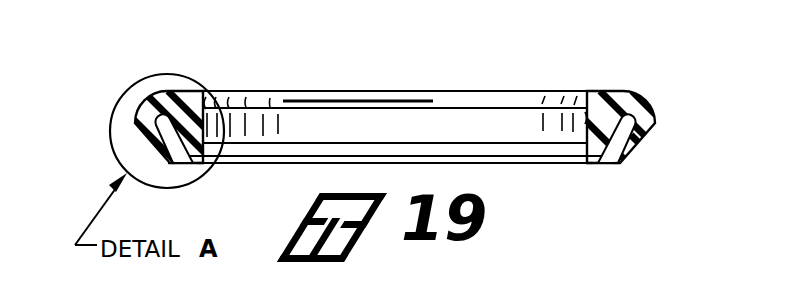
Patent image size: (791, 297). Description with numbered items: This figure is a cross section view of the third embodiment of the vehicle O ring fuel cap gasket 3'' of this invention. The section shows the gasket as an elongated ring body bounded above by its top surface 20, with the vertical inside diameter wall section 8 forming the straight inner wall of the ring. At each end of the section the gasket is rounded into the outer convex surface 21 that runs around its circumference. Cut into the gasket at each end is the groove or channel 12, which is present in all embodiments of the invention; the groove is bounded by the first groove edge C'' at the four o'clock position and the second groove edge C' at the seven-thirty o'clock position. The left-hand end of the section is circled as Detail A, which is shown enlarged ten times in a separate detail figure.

The vertical inside diameter wall section 8 is at (459, 117).
The top surface 20 is at (314, 91).
The outer convex surface 21 is at (146, 100).
The vehicle O ring fuel cap gasket 3'' is at (637, 114).
The groove or channel 12 is at (164, 126).
The second groove edge C' is at (417, 195).
The first groove edge C'' is at (395, 184).